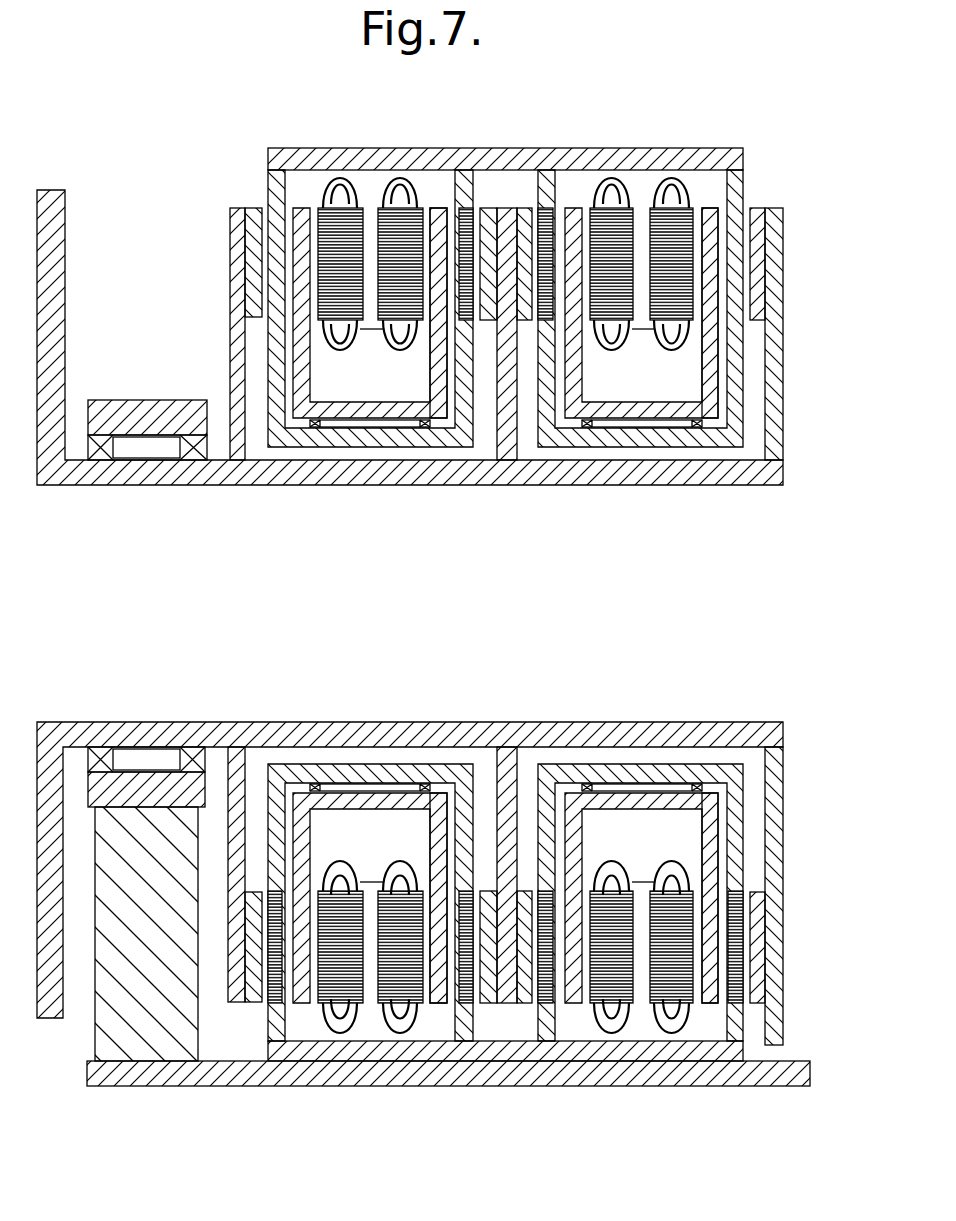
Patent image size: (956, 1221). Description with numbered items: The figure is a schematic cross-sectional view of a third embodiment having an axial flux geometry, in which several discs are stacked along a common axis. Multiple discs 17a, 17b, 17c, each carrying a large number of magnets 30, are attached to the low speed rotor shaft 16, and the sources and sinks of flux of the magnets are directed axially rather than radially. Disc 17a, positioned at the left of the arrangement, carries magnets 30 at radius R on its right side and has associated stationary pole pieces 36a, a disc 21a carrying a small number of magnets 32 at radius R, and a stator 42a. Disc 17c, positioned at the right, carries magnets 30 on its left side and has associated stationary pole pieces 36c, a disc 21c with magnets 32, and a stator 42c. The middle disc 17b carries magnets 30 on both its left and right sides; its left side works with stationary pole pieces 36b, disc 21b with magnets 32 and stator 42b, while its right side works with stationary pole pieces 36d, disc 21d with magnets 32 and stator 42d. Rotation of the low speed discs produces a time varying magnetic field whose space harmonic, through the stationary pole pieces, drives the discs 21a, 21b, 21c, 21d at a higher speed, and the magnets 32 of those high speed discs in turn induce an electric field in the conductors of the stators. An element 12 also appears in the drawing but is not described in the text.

The shaft 12 is at (162, 935).
The low speed rotor shaft 16 is at (130, 487).
The disc 17a is at (247, 450).
The disc 17b is at (505, 450).
The disc 17c is at (777, 425).
The disc 21a is at (300, 212).
The disc 21b is at (440, 212).
The disc 21c is at (710, 215).
The disc 21d is at (575, 212).
The magnets 30 is at (252, 990).
The magnets 32 is at (287, 1037).
The stationary pole pieces 36a is at (270, 208).
The stationary pole pieces 36b is at (462, 212).
The stationary pole pieces 36c is at (752, 232).
The stationary pole pieces 36d is at (548, 212).
The stator 42a is at (350, 215).
The stator 42b is at (392, 215).
The stator 42c is at (670, 215).
The stator 42d is at (612, 215).